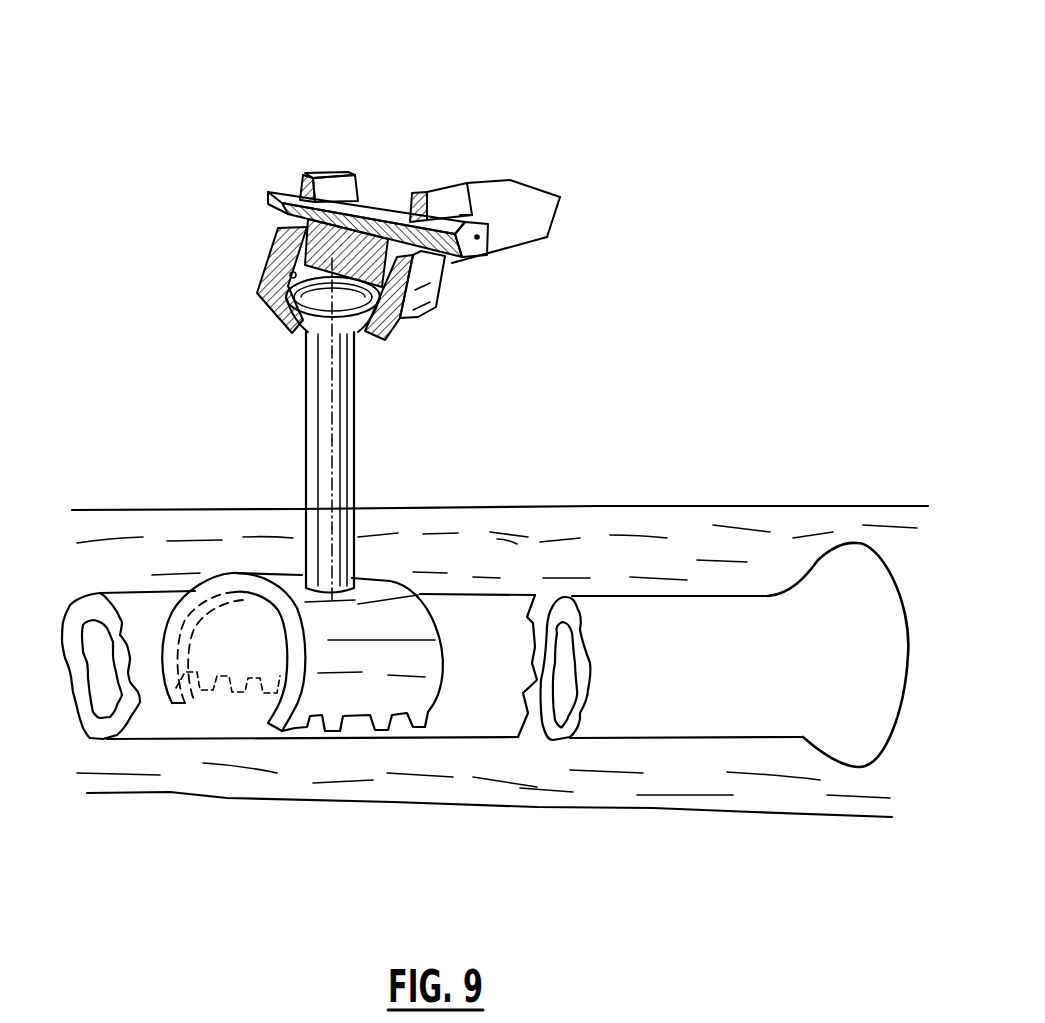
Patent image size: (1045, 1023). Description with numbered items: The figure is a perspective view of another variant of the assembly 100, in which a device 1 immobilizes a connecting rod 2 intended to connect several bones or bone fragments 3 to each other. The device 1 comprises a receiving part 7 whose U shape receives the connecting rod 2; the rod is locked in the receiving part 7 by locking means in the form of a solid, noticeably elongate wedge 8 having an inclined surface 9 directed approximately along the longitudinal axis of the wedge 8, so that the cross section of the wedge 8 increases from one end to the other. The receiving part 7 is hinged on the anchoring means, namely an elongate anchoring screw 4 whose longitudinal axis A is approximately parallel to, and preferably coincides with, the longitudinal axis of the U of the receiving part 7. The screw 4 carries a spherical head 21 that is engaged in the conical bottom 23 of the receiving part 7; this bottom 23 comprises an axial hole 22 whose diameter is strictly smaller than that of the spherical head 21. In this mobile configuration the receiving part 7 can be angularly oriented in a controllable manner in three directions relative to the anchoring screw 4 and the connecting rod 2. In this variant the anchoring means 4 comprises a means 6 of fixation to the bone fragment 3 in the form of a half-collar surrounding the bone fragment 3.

The assembly 100 is at (432, 323).
The device 1 is at (419, 297).
The connecting rod 2 is at (570, 208).
The bone fragment 3 is at (467, 710).
The anchoring screw 4 is at (330, 417).
The means of fixation 6 is at (390, 615).
The receiving part 7 is at (428, 318).
The wedge 8 is at (480, 237).
The inclined surface 9 is at (367, 192).
The spherical head 21 is at (285, 303).
The axial hole 22 is at (357, 333).
The bottom 23 is at (263, 268).
The longitudinal axis A is at (336, 522).